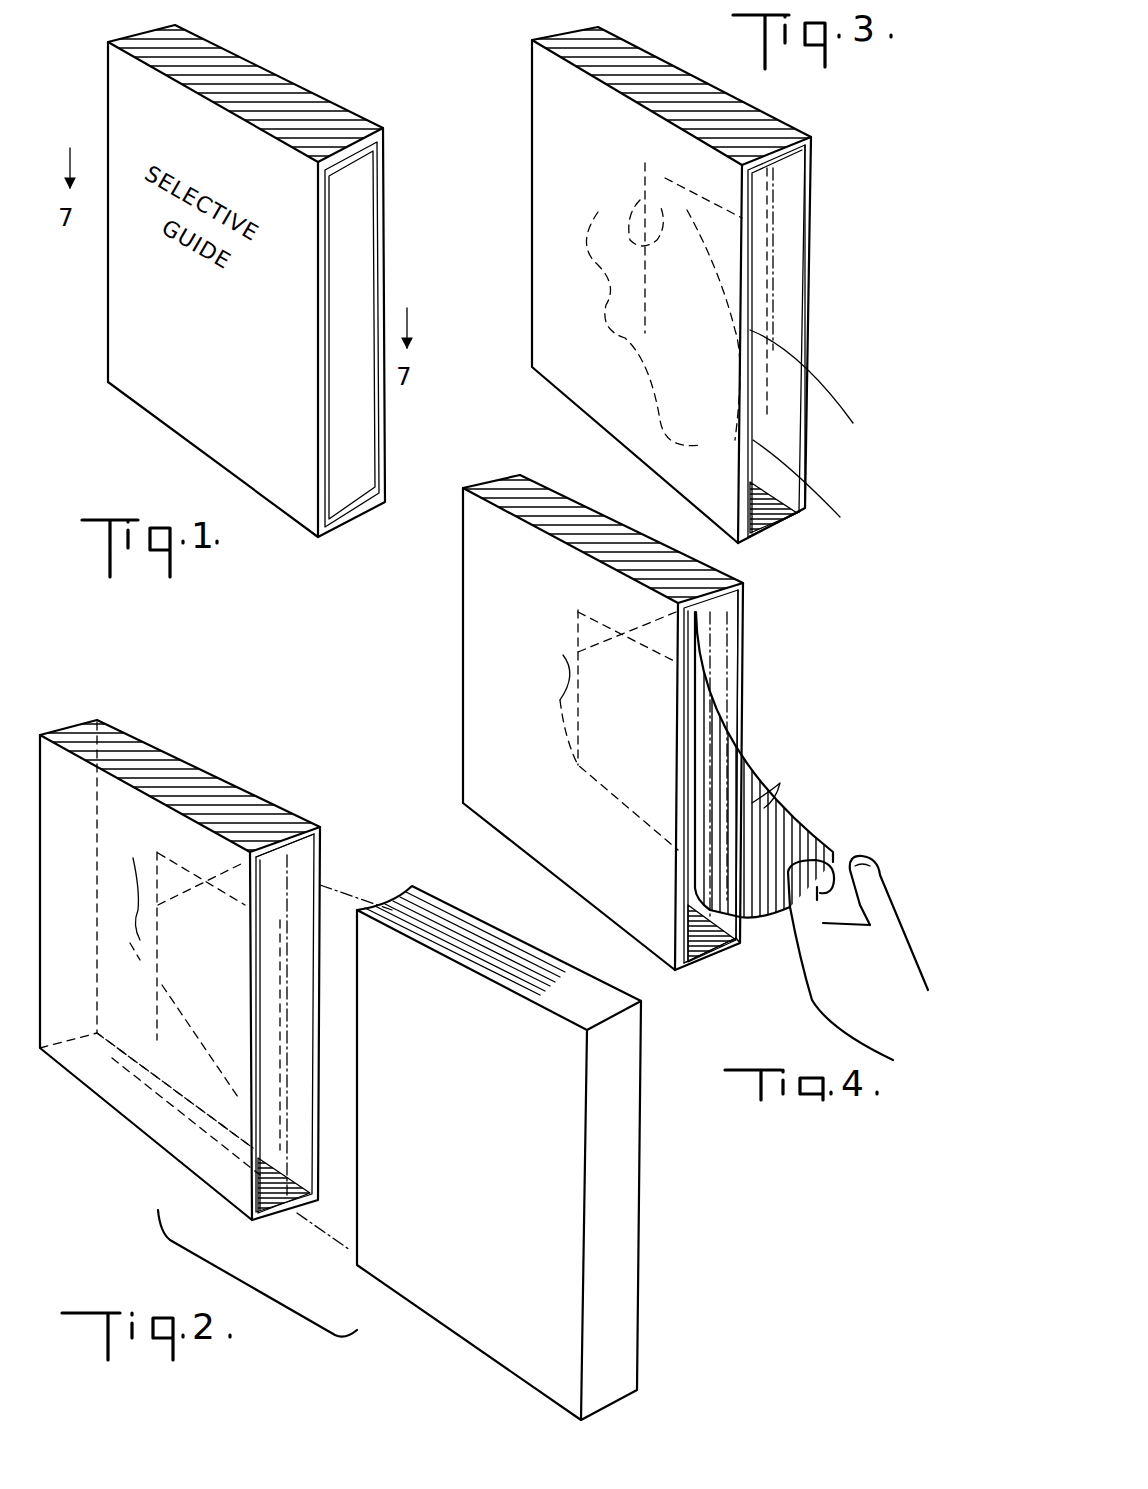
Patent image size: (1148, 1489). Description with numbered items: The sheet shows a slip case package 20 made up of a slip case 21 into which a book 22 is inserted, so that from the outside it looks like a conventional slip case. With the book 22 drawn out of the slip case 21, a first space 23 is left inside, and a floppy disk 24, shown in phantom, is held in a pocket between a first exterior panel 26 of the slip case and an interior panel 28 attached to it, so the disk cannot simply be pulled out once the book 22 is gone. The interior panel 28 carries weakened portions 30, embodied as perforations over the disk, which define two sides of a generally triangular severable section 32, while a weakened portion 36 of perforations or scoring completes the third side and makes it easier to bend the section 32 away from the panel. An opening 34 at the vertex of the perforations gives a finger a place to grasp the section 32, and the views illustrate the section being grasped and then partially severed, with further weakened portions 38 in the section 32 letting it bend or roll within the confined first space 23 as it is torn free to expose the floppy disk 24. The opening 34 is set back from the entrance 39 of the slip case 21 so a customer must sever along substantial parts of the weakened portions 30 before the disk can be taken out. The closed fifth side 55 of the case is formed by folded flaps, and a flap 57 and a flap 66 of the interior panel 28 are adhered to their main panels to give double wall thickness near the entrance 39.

In FIG. 1, the slip case package 20 is at (388, 124).
In FIG. 2, the slip case package 20 is at (228, 1300).
In FIG. 1, the slip case 21 is at (336, 136).
In FIG. 3, the slip case 21 is at (666, 98).
In FIG. 4, the slip case 21 is at (568, 520).
In FIG. 2, the slip case 21 is at (216, 776).
In FIG. 1, the book 22 is at (362, 228).
In FIG. 2, the book 22 is at (615, 1118).
In FIG. 3, the first space 23 is at (762, 520).
In FIG. 4, the first space 23 is at (695, 950).
In FIG. 2, the first space 23 is at (272, 1192).
In FIG. 3, the floppy disk 24 is at (658, 180).
In FIG. 4, the floppy disk 24 is at (596, 628).
In FIG. 2, the floppy disk 24 is at (197, 1032).
In FIG. 3, the first exterior panel 26 is at (812, 140).
In FIG. 4, the first exterior panel 26 is at (672, 562).
In FIG. 2, the first exterior panel 26 is at (303, 830).
In FIG. 3, the interior panel 28 is at (808, 514).
In FIG. 4, the interior panel 28 is at (712, 950).
In FIG. 2, the interior panel 28 is at (278, 855).
In FIG. 3, the weakened portions 30 is at (712, 192).
In FIG. 4, the weakened portions 30 is at (645, 632).
In FIG. 2, the weakened portions 30 is at (226, 872).
In FIG. 3, the severable section 32 is at (723, 200).
In FIG. 4, the severable section 32 is at (821, 840).
In FIG. 2, the severable section 32 is at (207, 980).
In FIG. 3, the opening 34 is at (634, 222).
In FIG. 4, the opening 34 is at (563, 674).
In FIG. 2, the opening 34 is at (121, 895).
In FIG. 3, the weakened portion 36 is at (780, 205).
In FIG. 4, the weakened portion 36 is at (712, 633).
In FIG. 2, the weakened portion 36 is at (295, 885).
In FIG. 4, the further weakened portions 38 is at (752, 803).
In FIG. 3, the entrance 39 is at (820, 252).
In FIG. 4, the entrance 39 is at (750, 700).
In FIG. 2, the entrance 39 is at (322, 963).
In FIG. 2, the fifth side 55 is at (47, 730).
In FIG. 3, the flap 57 is at (796, 522).
In FIG. 4, the flap 57 is at (728, 950).
In FIG. 3, the flap 66 is at (777, 259).
In FIG. 4, the flap 66 is at (727, 660).